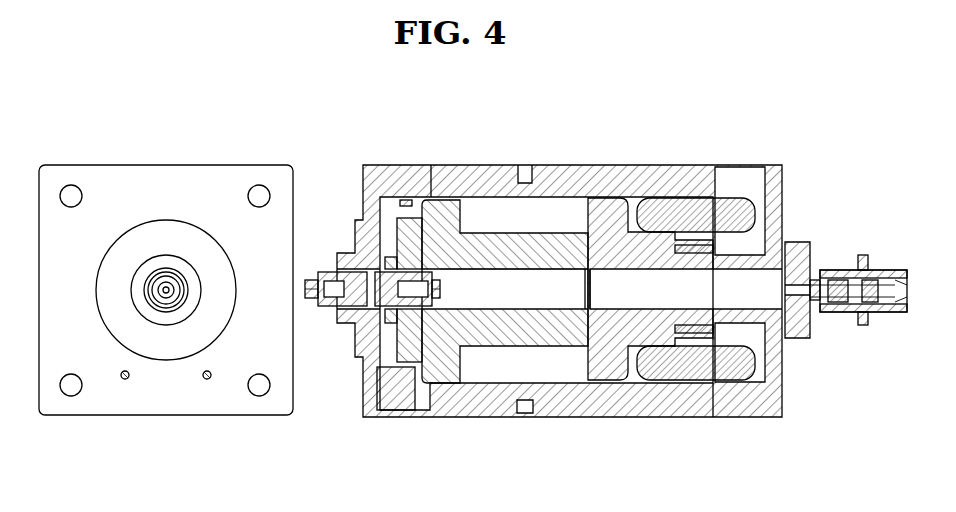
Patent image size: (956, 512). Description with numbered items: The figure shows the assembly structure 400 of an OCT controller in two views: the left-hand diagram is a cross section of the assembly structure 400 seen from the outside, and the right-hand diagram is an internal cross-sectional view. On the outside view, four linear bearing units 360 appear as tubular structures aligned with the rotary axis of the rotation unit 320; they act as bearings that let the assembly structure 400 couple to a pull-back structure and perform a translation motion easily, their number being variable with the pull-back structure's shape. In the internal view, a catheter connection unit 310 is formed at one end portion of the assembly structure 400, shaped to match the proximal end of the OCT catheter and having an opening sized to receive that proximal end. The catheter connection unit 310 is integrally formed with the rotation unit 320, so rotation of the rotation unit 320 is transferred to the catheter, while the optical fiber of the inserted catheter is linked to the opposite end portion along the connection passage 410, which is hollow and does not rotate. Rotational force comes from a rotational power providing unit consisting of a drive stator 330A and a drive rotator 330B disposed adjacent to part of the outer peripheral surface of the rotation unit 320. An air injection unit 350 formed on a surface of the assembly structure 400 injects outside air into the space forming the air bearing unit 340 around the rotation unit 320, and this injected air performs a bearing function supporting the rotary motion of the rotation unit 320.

The catheter connection unit 310 is at (870, 270).
The rotation unit 320 is at (470, 378).
The drive stator 330A is at (735, 374).
The drive rotator 330B is at (689, 336).
The air bearing unit 340 is at (601, 385).
The air injection unit 350 is at (526, 172).
The linear bearing unit 360 is at (69, 186).
The assembly structure 400 is at (606, 291).
The connection passage 410 is at (455, 296).